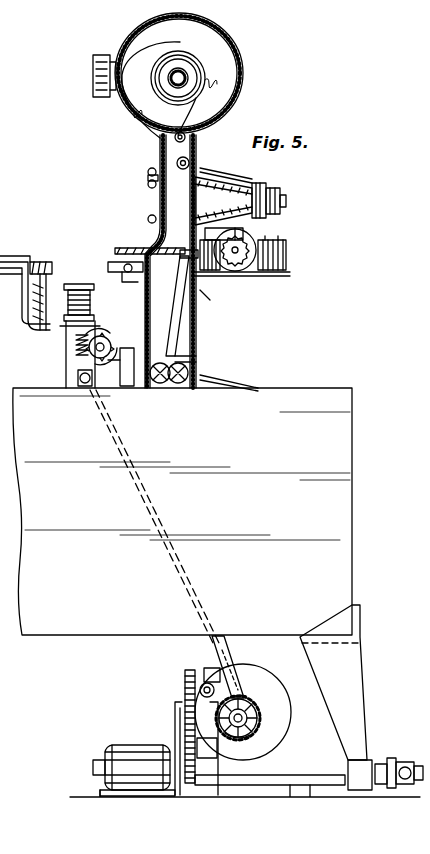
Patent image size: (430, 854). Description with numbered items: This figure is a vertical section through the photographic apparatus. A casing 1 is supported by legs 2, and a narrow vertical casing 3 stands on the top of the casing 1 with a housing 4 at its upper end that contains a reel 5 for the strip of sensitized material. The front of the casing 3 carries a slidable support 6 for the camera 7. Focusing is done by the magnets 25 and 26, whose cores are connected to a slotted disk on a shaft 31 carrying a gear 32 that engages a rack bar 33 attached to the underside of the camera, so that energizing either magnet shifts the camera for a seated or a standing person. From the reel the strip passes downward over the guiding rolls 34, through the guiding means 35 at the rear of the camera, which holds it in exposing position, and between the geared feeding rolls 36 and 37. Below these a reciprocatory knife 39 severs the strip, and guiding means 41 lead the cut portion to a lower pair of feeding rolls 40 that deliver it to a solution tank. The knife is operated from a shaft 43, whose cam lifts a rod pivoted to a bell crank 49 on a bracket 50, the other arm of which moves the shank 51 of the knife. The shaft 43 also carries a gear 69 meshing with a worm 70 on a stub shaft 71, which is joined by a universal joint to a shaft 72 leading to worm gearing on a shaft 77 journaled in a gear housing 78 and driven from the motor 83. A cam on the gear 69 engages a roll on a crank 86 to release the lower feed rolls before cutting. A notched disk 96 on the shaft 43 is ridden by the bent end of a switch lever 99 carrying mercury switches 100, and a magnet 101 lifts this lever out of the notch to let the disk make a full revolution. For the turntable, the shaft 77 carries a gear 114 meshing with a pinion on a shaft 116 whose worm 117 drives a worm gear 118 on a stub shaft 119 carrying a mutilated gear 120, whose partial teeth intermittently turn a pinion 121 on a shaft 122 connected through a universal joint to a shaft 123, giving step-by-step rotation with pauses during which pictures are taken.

The casing 1 is at (338, 450).
The legs 2 is at (356, 660).
The narrow vertical casing 3 is at (160, 152).
The housing 4 is at (244, 72).
The reel 5 is at (194, 72).
The slidable support 6 is at (195, 176).
The camera 7 is at (256, 183).
The magnet 25 is at (206, 266).
The magnet 26 is at (287, 262).
The shaft 31 is at (252, 266).
The gear 32 is at (238, 264).
The rack bar 33 is at (245, 236).
The guiding rolls 34 is at (187, 140).
The guiding means 35 is at (160, 195).
The feeding roll 36 is at (158, 218).
The feeding roll 37 is at (196, 222).
The reciprocatory knife 39 is at (186, 258).
The feeding rolls 40 is at (178, 383).
The guiding means 41 is at (203, 305).
The shaft 43 is at (104, 336).
The bell crank 49 is at (118, 264).
The bracket 50 is at (131, 276).
The shank 51 is at (132, 250).
The gear 69 is at (106, 360).
The worm 70 is at (76, 352).
The stub shaft 71 is at (82, 386).
The shaft 72 is at (226, 642).
The shaft 77 is at (262, 713).
The gear housing 78 is at (275, 688).
The motor 83 is at (114, 745).
The crank 86 is at (183, 307).
The disk 96 is at (106, 318).
The switch lever 99 is at (35, 328).
The mercury switches 100 is at (40, 262).
The magnet 101 is at (78, 284).
The gear 114 is at (248, 690).
The shaft 116 is at (215, 652).
The worm 117 is at (214, 670).
The worm gear 118 is at (232, 742).
The stub shaft 119 is at (178, 706).
The mutilated gear 120 is at (190, 682).
The pinion 121 is at (187, 738).
The shaft 122 is at (302, 766).
The shaft 123 is at (400, 762).